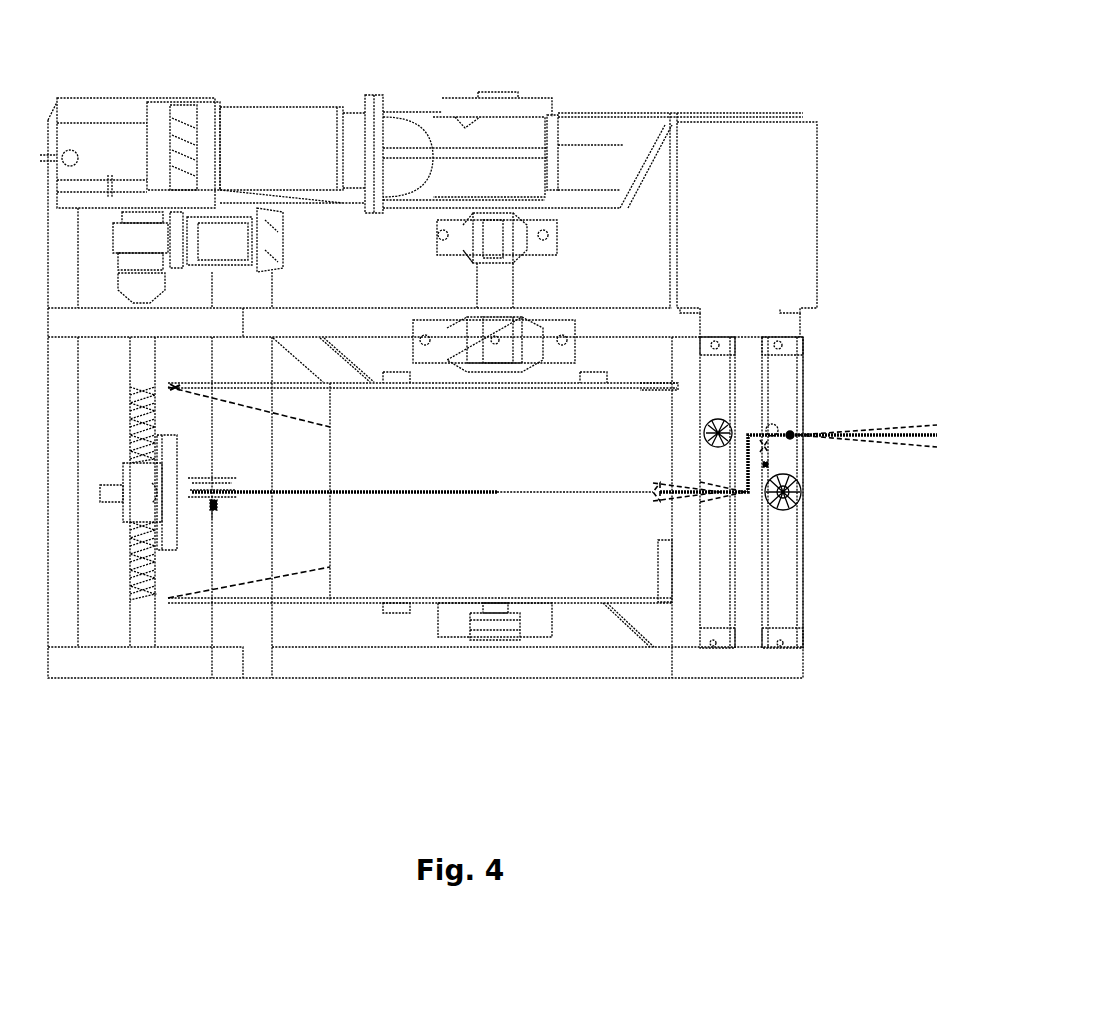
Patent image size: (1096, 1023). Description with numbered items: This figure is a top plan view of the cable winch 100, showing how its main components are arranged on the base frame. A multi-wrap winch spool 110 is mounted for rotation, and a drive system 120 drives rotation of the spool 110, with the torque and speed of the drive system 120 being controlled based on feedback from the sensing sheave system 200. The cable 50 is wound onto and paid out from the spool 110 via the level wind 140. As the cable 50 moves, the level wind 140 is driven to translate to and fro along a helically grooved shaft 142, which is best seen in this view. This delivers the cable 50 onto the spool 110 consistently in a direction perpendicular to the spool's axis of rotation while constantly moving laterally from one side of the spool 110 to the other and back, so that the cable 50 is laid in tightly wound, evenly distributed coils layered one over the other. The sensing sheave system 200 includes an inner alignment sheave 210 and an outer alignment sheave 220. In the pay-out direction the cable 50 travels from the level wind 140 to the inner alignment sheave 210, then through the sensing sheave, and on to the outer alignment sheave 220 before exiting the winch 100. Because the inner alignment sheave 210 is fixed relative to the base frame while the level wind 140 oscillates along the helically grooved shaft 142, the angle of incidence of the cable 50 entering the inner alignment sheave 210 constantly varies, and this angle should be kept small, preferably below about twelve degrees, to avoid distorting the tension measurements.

The cable winch 100 is at (880, 79).
The drive system 120 is at (553, 75).
The multi-wrap winch spool 110 is at (563, 545).
The helically grooved shaft 142 is at (133, 577).
The level wind 140 is at (180, 543).
The cable 50 is at (302, 503).
The sensing sheave system 200 is at (822, 595).
The outer alignment sheave 220 is at (783, 432).
The inner alignment sheave 210 is at (728, 503).